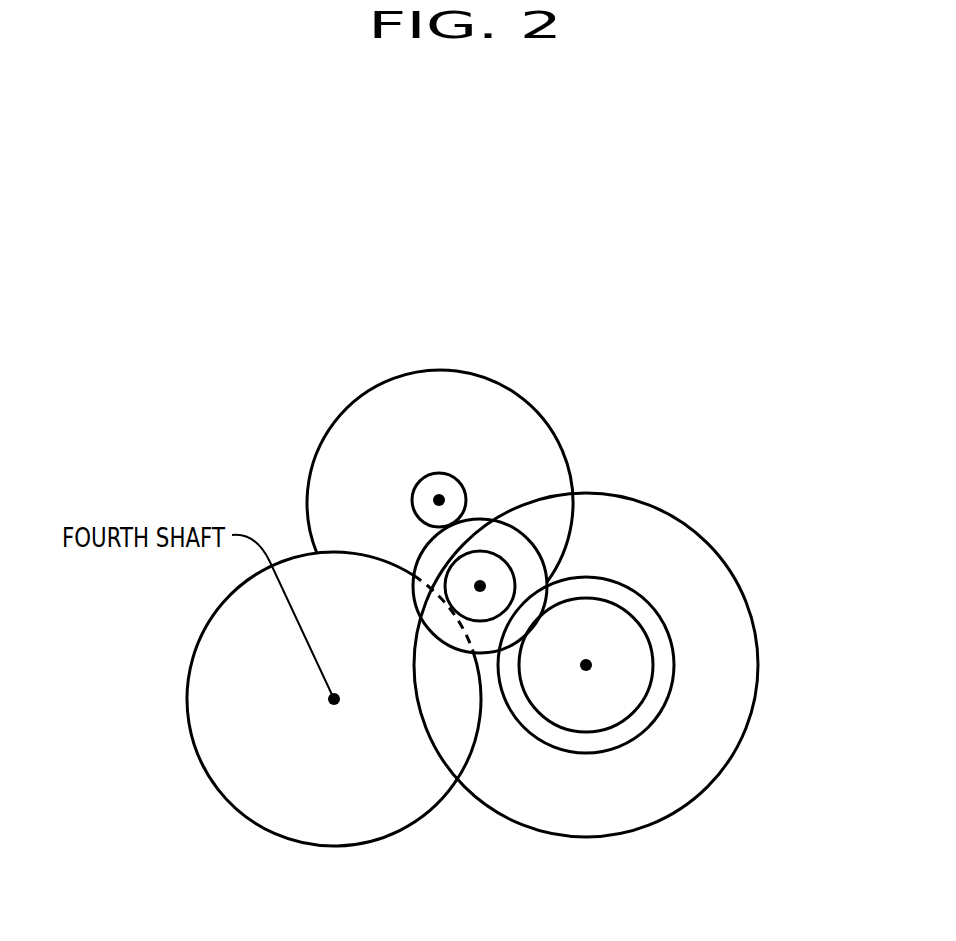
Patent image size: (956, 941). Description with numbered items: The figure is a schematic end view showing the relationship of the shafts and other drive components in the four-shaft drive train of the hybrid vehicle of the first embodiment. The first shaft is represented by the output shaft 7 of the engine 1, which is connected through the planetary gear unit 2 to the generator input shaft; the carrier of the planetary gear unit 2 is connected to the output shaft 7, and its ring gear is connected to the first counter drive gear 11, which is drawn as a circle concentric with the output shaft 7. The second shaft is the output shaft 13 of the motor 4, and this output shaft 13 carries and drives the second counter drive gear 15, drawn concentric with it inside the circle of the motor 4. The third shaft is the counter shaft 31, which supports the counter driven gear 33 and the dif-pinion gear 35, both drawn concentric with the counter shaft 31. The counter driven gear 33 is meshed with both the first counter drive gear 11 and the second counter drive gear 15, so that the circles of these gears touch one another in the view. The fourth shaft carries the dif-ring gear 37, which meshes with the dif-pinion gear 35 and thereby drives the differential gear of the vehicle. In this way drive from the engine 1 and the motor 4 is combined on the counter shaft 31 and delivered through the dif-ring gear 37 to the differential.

The engine 1 is at (745, 742).
The planetary gear unit 2 is at (672, 647).
The first counter drive gear 11 is at (565, 729).
The output shaft 7 is at (586, 665).
The motor 4 is at (376, 383).
The second counter drive gear 15 is at (413, 508).
The output shaft 13 is at (439, 500).
The counter driven gear 33 is at (413, 597).
The dif-pinion gear 35 is at (515, 588).
The counter shaft 31 is at (480, 586).
The dif-ring gear 37 is at (332, 847).